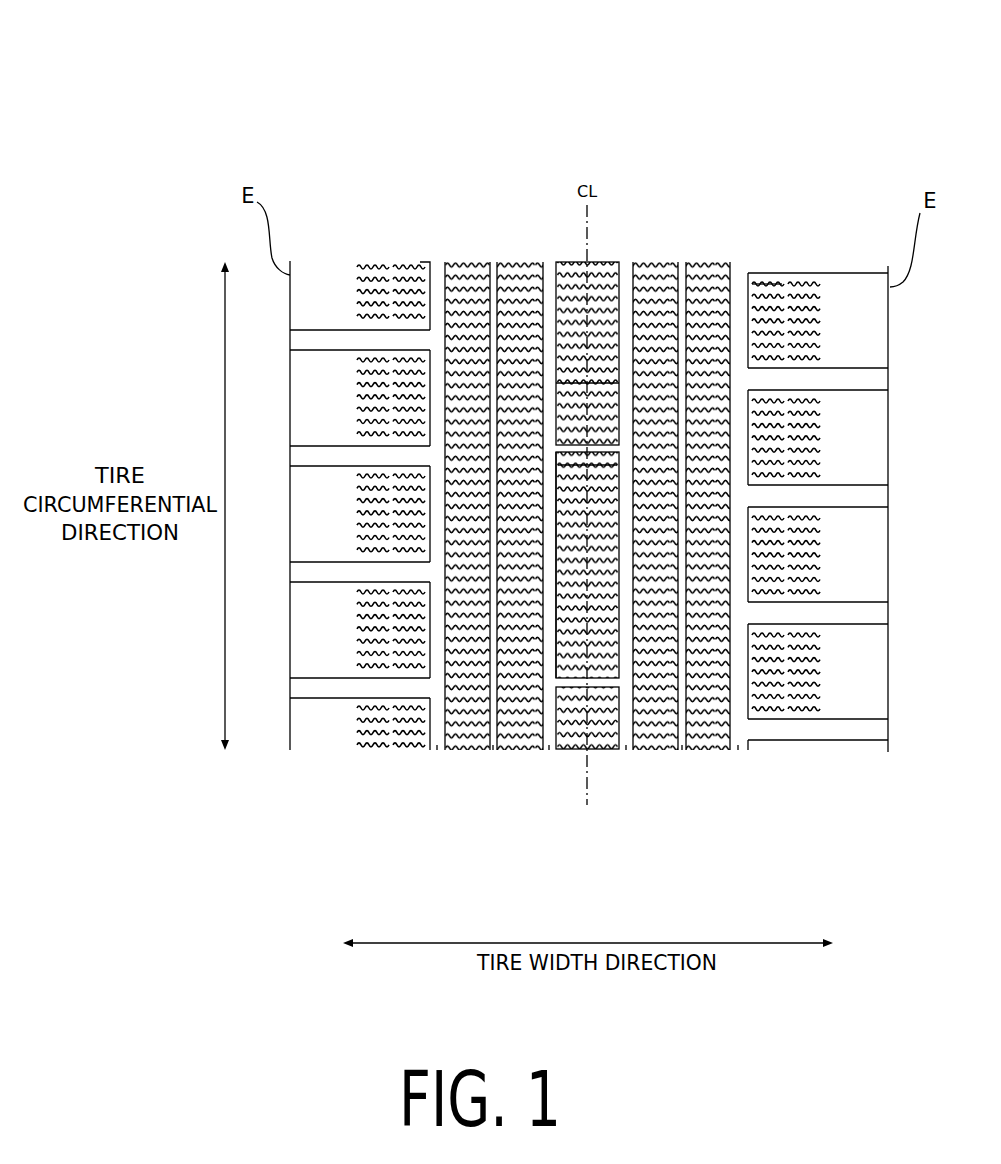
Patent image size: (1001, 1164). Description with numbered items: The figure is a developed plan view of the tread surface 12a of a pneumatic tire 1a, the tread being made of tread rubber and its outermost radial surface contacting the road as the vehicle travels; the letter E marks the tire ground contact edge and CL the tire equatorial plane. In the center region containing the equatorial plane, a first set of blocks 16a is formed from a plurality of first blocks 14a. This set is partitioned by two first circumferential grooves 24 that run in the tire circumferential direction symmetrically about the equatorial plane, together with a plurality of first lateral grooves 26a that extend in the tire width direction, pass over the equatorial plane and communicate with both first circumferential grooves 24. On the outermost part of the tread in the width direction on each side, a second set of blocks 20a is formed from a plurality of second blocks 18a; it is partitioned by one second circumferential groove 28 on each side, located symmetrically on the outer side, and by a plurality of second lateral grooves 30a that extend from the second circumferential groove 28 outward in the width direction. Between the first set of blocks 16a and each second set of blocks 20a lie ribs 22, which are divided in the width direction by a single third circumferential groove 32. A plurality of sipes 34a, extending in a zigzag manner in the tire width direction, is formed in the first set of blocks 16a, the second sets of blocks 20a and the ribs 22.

The pneumatic tire 1a is at (395, 112).
The tread surface 12a is at (453, 170).
The first block 14a is at (555, 467).
The first set of blocks 16a is at (570, 208).
The second block 18a is at (290, 300).
The second set of blocks 20a is at (364, 238).
The rib 22 is at (498, 221).
The first circumferential groove 24 is at (548, 740).
The first lateral groove 26a is at (603, 445).
The second circumferential groove 28 is at (440, 743).
The second lateral groove 30a is at (320, 457).
The third circumferential groove 32 is at (493, 745).
The sipe 34a is at (765, 285).